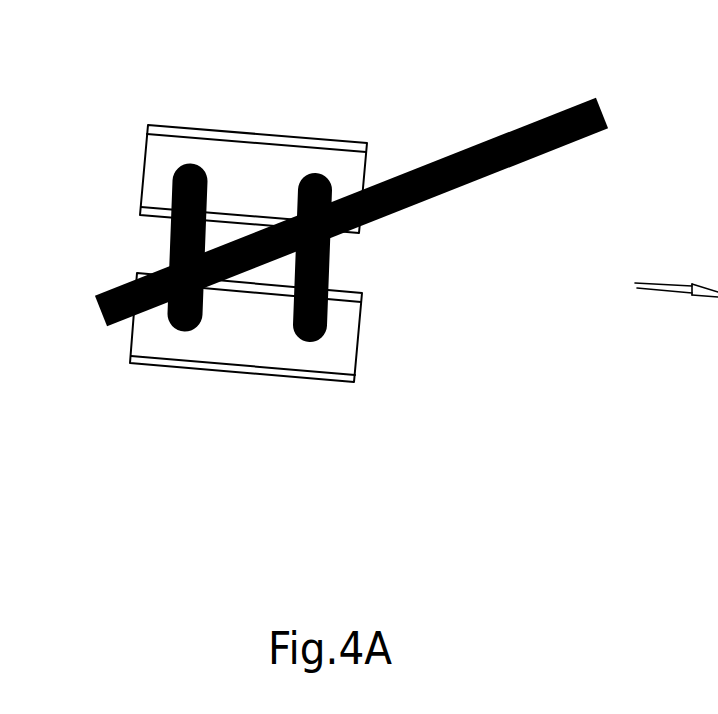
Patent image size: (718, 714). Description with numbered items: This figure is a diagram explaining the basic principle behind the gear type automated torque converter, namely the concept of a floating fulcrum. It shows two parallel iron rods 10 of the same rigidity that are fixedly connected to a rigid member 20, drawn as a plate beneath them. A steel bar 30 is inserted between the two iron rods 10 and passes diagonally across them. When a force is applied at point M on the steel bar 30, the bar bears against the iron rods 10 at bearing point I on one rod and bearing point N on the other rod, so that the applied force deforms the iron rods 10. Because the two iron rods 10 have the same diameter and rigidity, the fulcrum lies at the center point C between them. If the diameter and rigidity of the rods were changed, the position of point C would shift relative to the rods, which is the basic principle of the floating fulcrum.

The iron rods 10 is at (209, 180).
The rigid member 20 is at (334, 345).
The steel bar 30 is at (604, 100).
The bearing point N is at (143, 242).
The bearing point I is at (360, 263).
The force application point M is at (580, 77).
The fulcrum center point C is at (252, 210).